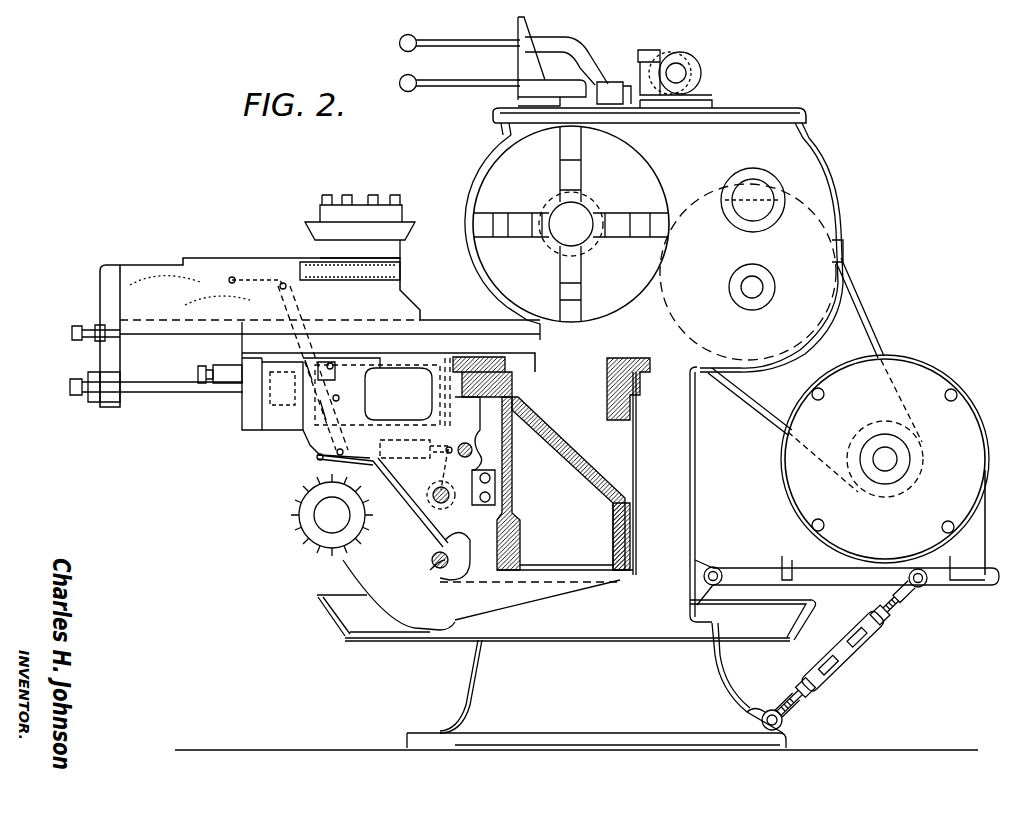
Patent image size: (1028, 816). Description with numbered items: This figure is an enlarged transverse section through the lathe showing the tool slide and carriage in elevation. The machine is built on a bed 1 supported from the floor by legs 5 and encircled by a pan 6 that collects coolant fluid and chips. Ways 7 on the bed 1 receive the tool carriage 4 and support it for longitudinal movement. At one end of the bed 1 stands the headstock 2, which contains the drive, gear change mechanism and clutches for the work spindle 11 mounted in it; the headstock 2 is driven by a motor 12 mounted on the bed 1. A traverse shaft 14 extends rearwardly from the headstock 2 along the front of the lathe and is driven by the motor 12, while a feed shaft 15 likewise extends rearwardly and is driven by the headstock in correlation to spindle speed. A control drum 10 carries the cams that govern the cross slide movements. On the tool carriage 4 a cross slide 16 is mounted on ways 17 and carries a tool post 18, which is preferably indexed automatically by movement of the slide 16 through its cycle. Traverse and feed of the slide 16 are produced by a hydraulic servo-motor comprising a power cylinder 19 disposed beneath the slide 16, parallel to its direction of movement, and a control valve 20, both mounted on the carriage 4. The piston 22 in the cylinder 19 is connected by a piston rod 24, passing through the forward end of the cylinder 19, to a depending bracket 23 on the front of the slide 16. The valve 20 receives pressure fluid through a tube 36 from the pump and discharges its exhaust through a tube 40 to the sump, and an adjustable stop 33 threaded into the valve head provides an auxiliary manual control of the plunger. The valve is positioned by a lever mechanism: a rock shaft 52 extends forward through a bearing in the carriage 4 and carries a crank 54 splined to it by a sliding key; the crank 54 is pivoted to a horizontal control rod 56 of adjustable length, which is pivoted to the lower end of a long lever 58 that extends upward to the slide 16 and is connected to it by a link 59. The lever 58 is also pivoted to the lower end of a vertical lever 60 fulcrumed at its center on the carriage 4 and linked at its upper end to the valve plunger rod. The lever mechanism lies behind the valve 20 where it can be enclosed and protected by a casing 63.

The bed 1 is at (622, 503).
The headstock 2 is at (812, 152).
The tool carriage 4 is at (240, 343).
The legs 5 is at (470, 680).
The pan 6 is at (334, 640).
The ways 7 is at (480, 356).
The control drum 10 is at (297, 515).
The work spindle 11 is at (590, 205).
The motor 12 is at (925, 380).
The traverse shaft 14 is at (434, 566).
The feed shaft 15 is at (468, 445).
The cross slide 16 is at (150, 266).
The ways 17 is at (440, 332).
The tool post 18 is at (320, 212).
The power cylinder 19 is at (280, 432).
The control valve 20 is at (248, 385).
The piston 22 is at (256, 430).
The depending bracket 23 is at (100, 350).
The piston rod 24 is at (150, 396).
The adjustable stop 33 is at (198, 372).
The tube 36 is at (491, 477).
The tube 40 is at (492, 497).
The rock shaft 52 is at (435, 500).
The crank 54 is at (440, 462).
The control rod 56 is at (412, 440).
The long lever 58 is at (292, 320).
The link 59 is at (258, 278).
The vertical lever 60 is at (340, 362).
The casing 63 is at (318, 458).